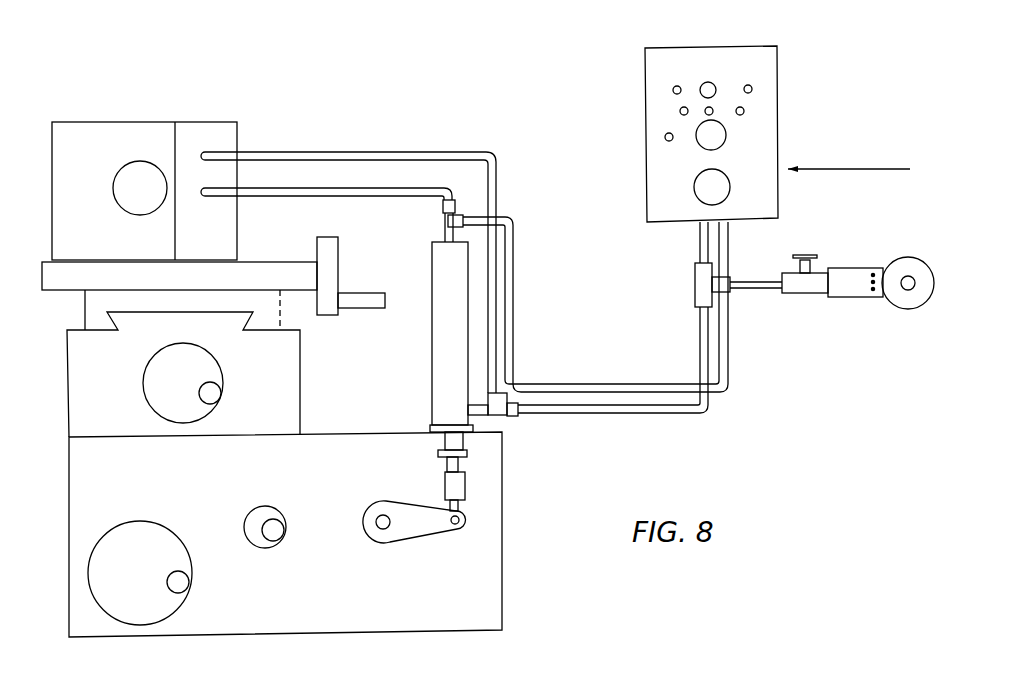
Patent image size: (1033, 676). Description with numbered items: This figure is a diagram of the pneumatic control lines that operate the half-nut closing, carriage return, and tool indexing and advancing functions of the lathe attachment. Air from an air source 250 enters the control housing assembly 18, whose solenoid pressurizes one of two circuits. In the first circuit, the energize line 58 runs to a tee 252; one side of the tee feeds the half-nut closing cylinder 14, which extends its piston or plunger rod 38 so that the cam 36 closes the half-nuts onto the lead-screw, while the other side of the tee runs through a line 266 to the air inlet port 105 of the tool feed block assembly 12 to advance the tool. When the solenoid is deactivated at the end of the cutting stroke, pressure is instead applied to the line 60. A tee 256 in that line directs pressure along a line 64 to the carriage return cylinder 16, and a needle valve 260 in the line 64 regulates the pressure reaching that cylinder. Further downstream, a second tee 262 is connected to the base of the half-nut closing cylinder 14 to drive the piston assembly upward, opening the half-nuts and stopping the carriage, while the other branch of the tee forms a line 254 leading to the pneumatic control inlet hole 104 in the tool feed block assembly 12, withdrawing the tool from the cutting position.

The tool feed block assembly 12 is at (157, 103).
The half-nut closing cylinder 14 is at (420, 352).
The carriage return cylinder 16 is at (910, 247).
The control housing assembly 18 is at (622, 157).
The cam 36 is at (407, 531).
The piston or plunger rod 38 is at (445, 463).
The energize line 58 is at (514, 360).
The line 60 is at (642, 411).
The line 64 is at (750, 282).
The pneumatic control inlet hole 104 is at (207, 150).
The air inlet port 105 is at (207, 198).
The air source 250 is at (845, 167).
The tee 252 is at (447, 213).
The line 254 is at (310, 152).
The tee 256 is at (695, 285).
The needle valve 260 is at (817, 289).
The second tee 262 is at (500, 414).
The line 266 is at (323, 188).